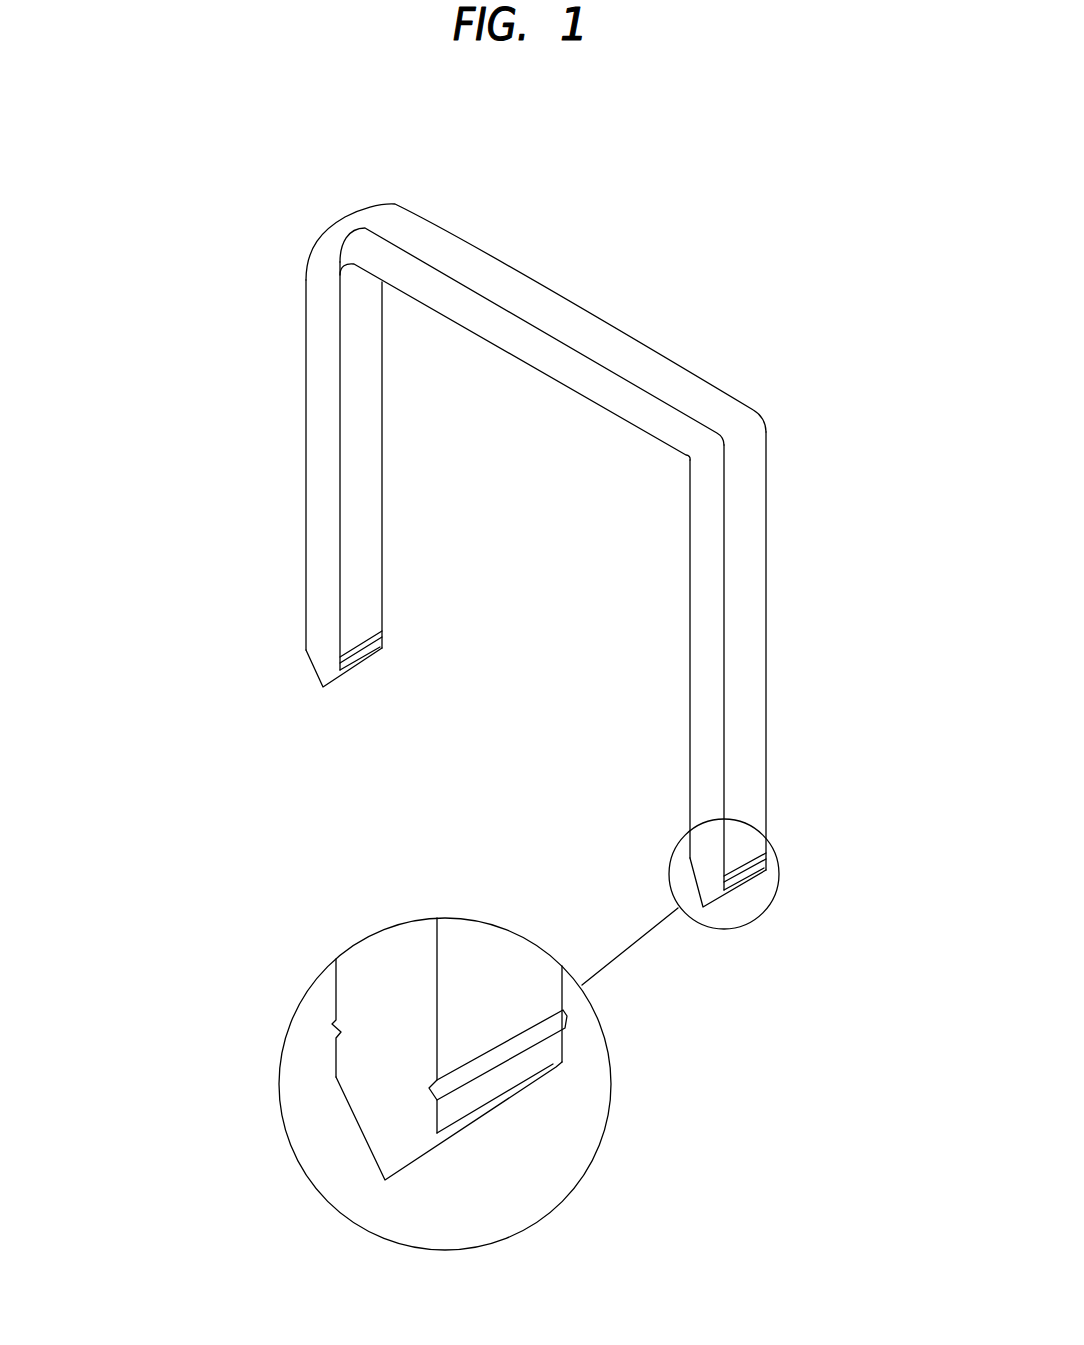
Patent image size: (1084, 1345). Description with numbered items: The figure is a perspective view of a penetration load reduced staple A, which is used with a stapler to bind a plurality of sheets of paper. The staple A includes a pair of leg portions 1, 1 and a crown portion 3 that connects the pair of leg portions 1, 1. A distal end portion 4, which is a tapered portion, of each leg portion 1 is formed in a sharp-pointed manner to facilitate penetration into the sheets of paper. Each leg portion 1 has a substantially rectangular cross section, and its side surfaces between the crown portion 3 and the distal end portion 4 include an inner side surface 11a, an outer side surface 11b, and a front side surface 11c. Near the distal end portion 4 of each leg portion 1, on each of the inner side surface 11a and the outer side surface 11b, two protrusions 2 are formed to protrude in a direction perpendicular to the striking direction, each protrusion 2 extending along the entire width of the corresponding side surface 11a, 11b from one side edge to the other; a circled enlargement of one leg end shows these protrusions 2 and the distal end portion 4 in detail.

The penetration load reduced staple A is at (568, 252).
The leg portion 1 is at (307, 345).
The protrusion 2 is at (306, 638).
The crown portion 3 is at (595, 337).
The distal end portion 4 is at (322, 672).
The inner side surface 11a is at (360, 506).
The outer side surface 11b is at (748, 771).
The front side surface 11c is at (320, 412).